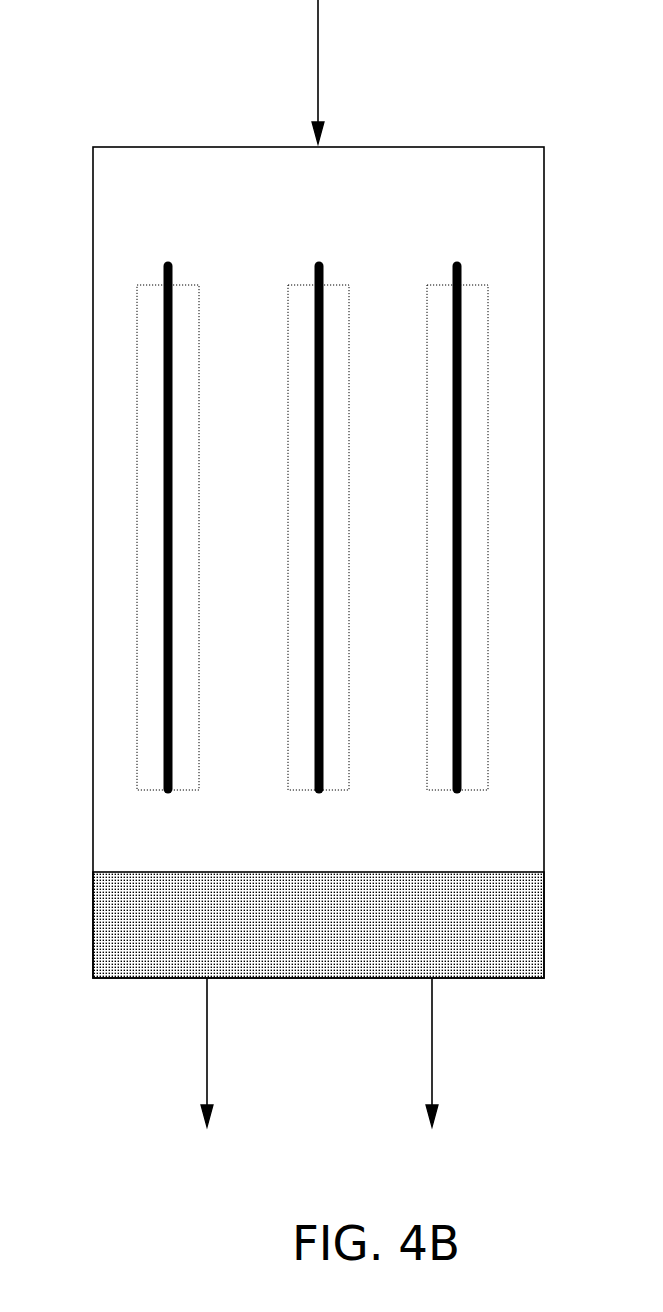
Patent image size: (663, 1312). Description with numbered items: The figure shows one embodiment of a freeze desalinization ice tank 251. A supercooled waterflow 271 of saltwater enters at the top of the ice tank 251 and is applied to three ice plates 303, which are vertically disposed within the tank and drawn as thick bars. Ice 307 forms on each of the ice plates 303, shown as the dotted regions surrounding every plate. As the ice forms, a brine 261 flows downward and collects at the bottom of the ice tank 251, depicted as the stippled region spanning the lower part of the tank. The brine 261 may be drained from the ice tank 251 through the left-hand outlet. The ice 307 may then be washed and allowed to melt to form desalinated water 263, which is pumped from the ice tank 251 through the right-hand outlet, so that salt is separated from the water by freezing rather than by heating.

The freeze desalinization ice tank 251 is at (131, 144).
The supercooled waterflow 271 is at (318, 75).
The ice plates 303 is at (167, 260).
The ice 307 is at (148, 283).
The brine 261 is at (153, 1043).
The desalinated water 263 is at (432, 1090).